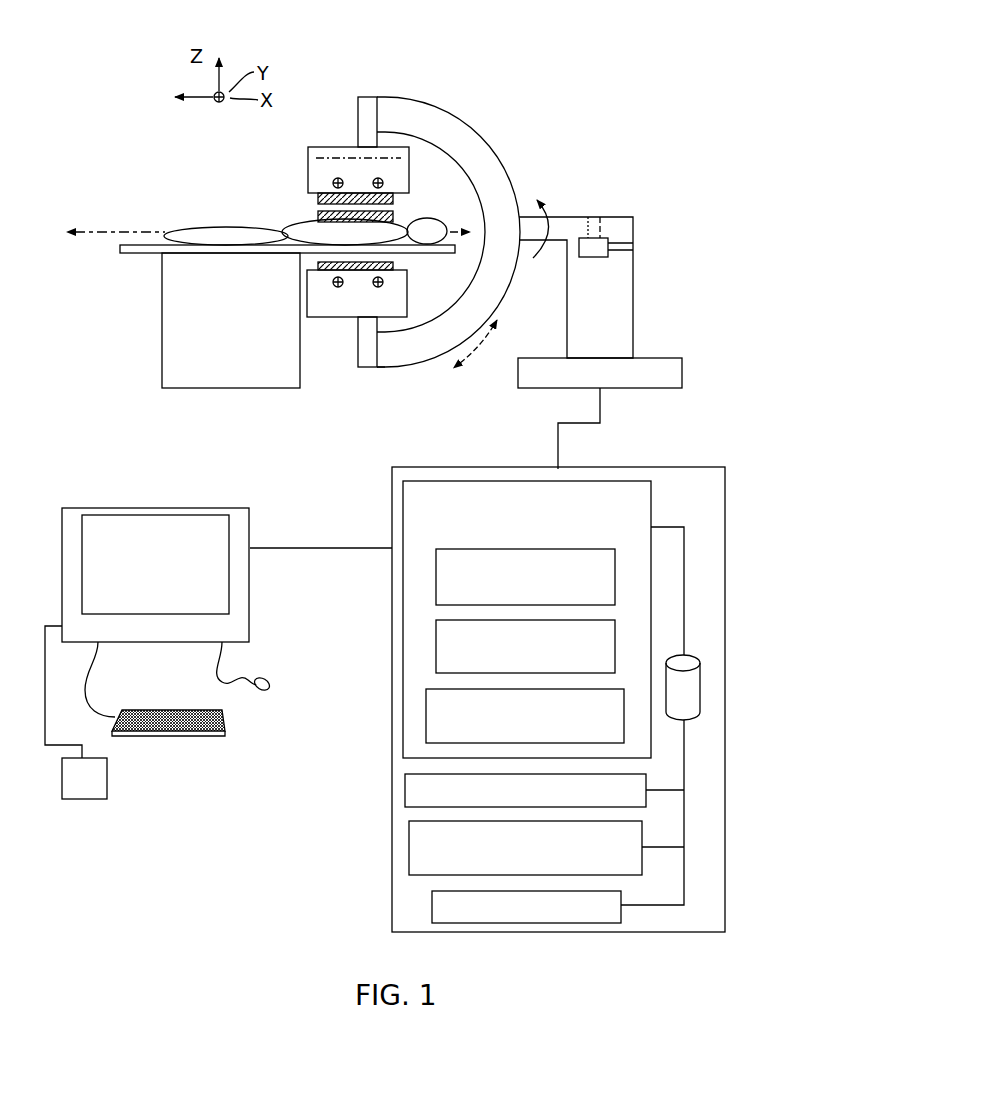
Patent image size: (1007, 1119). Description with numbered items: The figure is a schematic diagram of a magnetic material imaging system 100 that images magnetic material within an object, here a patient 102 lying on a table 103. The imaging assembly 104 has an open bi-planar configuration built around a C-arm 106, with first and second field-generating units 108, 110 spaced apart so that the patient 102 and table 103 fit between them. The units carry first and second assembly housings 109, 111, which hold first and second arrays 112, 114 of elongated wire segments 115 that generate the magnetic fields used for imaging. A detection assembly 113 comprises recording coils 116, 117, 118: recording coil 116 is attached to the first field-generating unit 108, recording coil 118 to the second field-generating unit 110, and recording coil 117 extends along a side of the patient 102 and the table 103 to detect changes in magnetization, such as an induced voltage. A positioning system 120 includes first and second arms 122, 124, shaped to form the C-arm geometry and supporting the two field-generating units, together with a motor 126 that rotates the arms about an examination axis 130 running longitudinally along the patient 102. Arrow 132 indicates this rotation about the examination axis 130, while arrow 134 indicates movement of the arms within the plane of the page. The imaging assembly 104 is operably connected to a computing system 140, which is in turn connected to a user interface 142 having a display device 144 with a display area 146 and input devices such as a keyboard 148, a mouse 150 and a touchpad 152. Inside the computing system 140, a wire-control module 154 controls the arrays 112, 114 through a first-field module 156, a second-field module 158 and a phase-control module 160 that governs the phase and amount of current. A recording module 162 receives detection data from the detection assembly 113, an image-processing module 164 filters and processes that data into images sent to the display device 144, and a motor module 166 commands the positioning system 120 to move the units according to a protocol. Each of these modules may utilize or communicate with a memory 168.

The MMI system 100 is at (630, 47).
The patient 102 is at (424, 217).
The table 103 is at (128, 253).
The imaging assembly 104 is at (562, 125).
The C-arm 106 is at (435, 107).
The first field-generating unit 108 is at (328, 137).
The first assembly housing 109 is at (344, 147).
The second field-generating unit 110 is at (326, 331).
The second assembly housing 111 is at (347, 318).
The first array 112 is at (324, 176).
The detection assembly 113 is at (290, 213).
The second array 114 is at (392, 292).
The wire segments 115 is at (332, 181).
The recording coil 116 is at (320, 203).
The recording coil 117 is at (395, 215).
The recording coil 118 is at (383, 263).
The positioning system 120 is at (627, 200).
The first arm 122 is at (492, 150).
The second arm 124 is at (400, 367).
The motor 126 is at (594, 257).
The examination axis 130 is at (130, 231).
The arrow 132 is at (548, 225).
The arrow 134 is at (483, 345).
The computing system 140 is at (677, 457).
The user interface 142 is at (200, 483).
The display device 144 is at (184, 630).
The display area 146 is at (184, 553).
The keyboard 148 is at (225, 720).
The mouse 150 is at (270, 684).
The touchpad 152 is at (85, 799).
The wire-control module 154 is at (651, 503).
The first-field module 156 is at (436, 578).
The second-field module 158 is at (436, 647).
The phase-control module 160 is at (426, 716).
The recording module 162 is at (405, 790).
The image-processing module 164 is at (409, 847).
The motor module 166 is at (432, 908).
The memory 168 is at (700, 687).